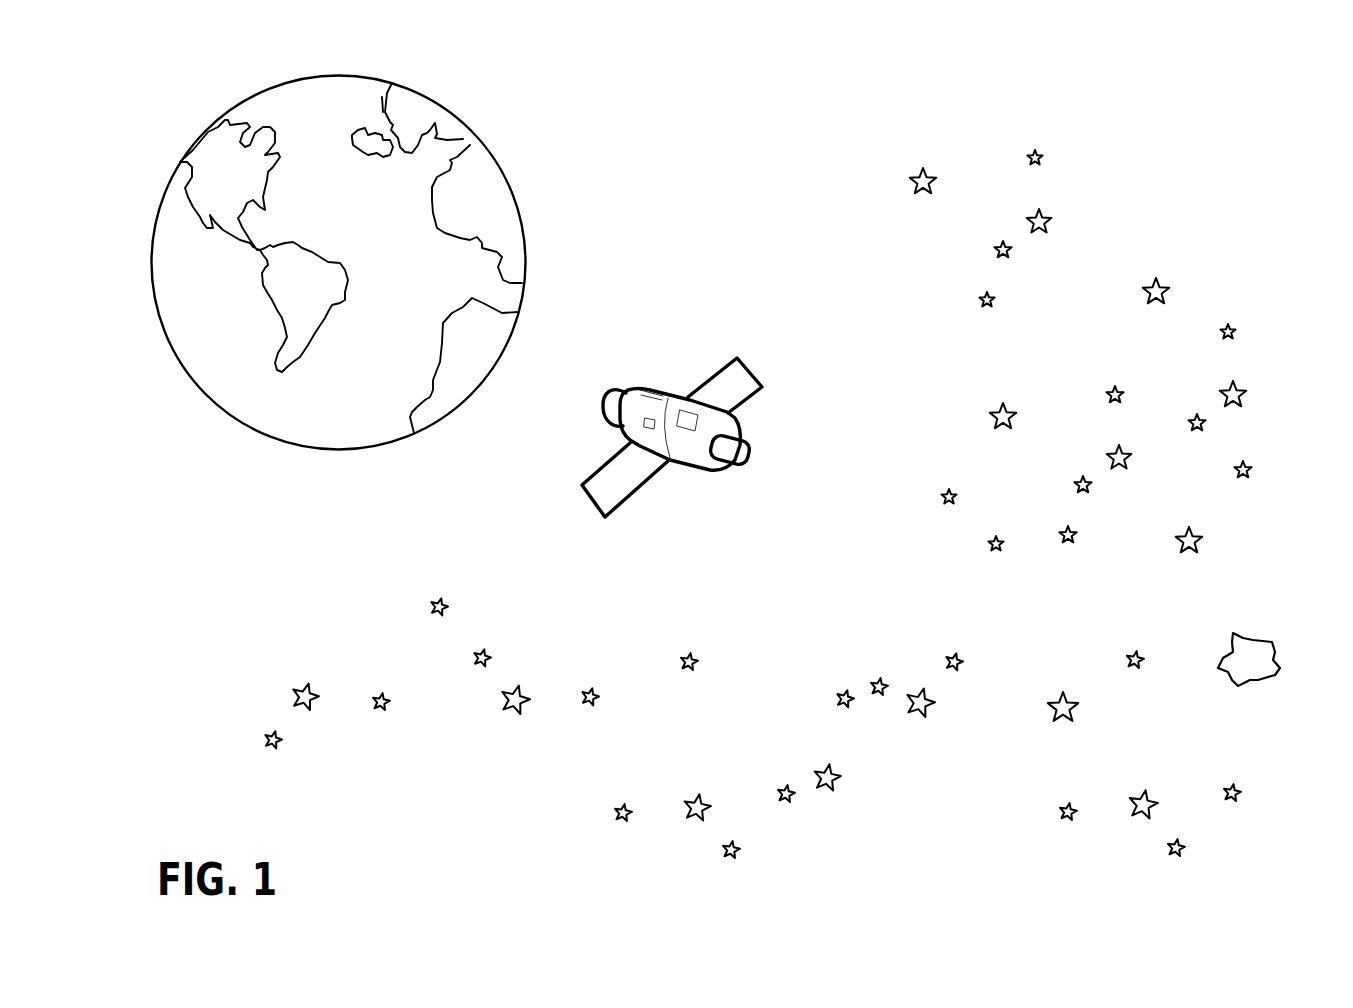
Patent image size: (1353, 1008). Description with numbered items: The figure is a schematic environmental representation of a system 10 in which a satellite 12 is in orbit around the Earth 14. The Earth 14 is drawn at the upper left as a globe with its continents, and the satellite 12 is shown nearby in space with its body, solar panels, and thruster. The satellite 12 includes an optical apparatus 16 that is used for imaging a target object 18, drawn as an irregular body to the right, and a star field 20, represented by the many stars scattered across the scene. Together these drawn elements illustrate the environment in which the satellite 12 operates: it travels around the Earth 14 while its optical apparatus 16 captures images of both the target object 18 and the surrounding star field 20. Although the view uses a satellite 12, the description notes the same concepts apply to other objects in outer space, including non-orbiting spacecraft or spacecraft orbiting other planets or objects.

The system 10 is at (760, 100).
The satellite 12 is at (752, 372).
The Earth 14 is at (460, 122).
The optical apparatus 16 is at (740, 462).
The target object 18 is at (1243, 633).
The star field 20 is at (1235, 235).